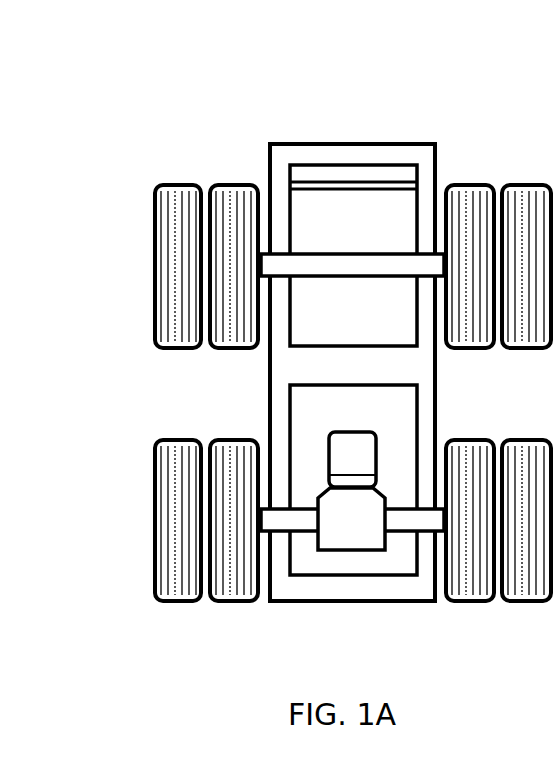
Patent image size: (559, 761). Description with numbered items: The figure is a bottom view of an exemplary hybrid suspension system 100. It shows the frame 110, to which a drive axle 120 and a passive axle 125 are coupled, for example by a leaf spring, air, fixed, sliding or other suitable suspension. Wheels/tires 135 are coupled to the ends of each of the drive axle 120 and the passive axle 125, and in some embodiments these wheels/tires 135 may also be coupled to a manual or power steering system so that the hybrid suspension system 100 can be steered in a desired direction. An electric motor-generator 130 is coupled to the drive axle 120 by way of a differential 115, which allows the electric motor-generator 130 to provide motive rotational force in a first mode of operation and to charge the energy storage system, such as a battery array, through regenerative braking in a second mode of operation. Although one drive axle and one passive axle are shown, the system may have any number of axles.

The hybrid suspension system 100 is at (148, 97).
The frame 110 is at (372, 142).
The differential 115 is at (333, 555).
The drive axle 120 is at (408, 533).
The passive axle 125 is at (317, 252).
The electric motor-generator 130 is at (325, 437).
The wheels/tires 135 is at (126, 541).